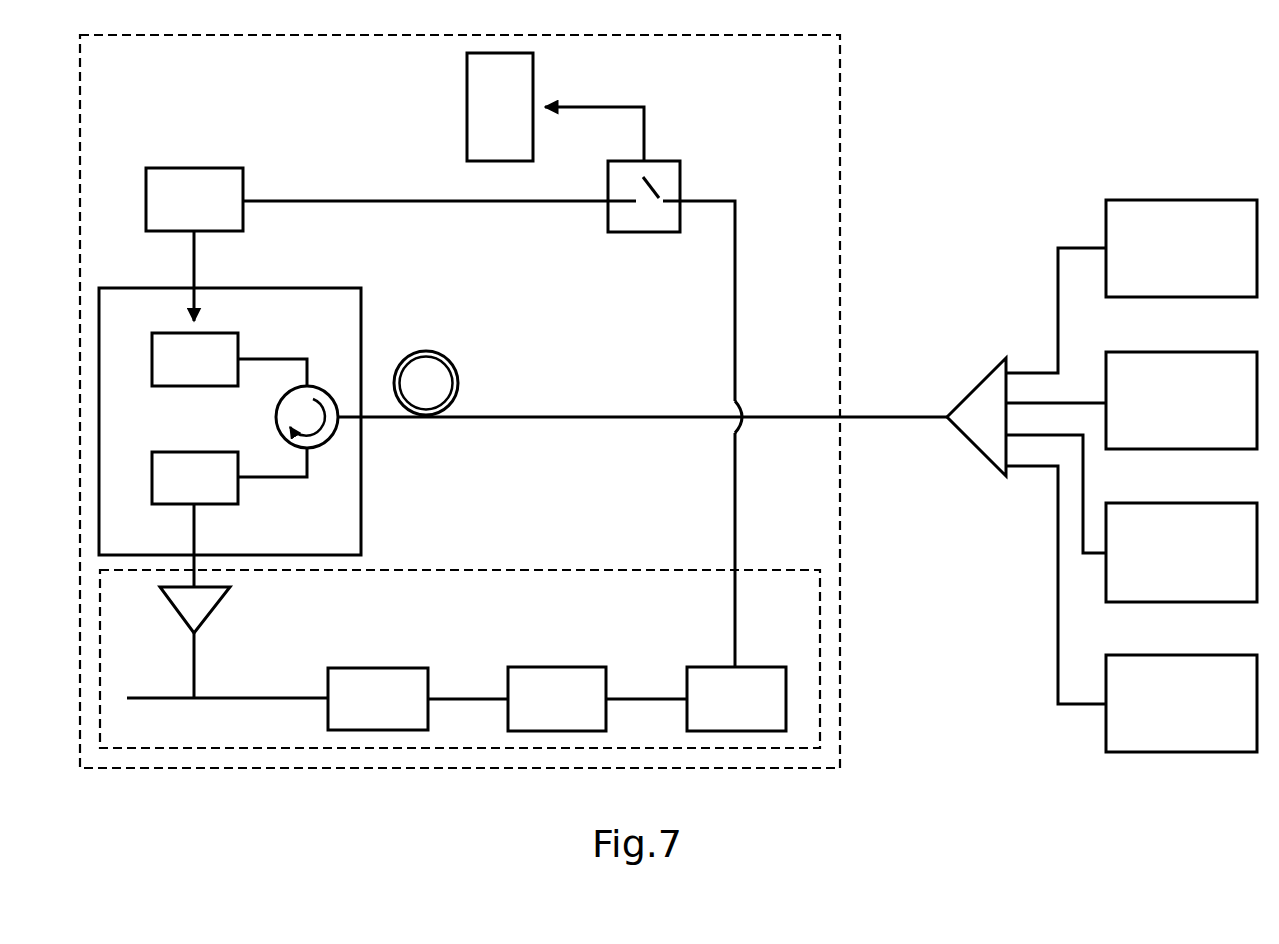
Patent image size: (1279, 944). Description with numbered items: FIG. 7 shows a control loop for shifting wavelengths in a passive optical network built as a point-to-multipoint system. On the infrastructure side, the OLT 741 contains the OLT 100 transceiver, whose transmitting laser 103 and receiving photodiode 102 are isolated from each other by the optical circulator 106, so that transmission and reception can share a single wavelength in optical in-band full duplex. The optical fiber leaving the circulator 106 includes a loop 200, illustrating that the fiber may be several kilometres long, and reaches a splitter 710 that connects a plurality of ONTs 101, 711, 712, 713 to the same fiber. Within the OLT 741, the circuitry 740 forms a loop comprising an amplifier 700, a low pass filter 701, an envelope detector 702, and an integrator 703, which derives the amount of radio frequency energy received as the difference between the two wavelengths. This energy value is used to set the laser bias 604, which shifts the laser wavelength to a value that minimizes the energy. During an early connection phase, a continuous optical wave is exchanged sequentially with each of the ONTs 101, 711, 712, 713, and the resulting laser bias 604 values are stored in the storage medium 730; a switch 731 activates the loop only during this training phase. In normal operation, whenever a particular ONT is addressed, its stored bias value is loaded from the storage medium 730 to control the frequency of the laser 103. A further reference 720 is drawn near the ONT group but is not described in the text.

The OLT 100 is at (110, 552).
The ONT 101 is at (1181, 248).
The diode 102 is at (229, 517).
The laser 103 is at (229, 359).
The optical circulator 106 is at (283, 432).
The loop 200 is at (425, 341).
The laser bias 604 is at (391, 244).
The amplifier 700 is at (226, 605).
The low pass filter 701 is at (418, 699).
The envelope detector 702 is at (597, 699).
The integrator 703 is at (736, 699).
The splitter 710 is at (975, 448).
The ONT 711 is at (1181, 400).
The ONT 712 is at (1181, 552).
The ONT 713 is at (1181, 703).
The monitoring device 720 is at (1165, 110).
The storage medium 730 is at (555, 107).
The switch 731 is at (630, 234).
The circuitry 740 is at (637, 572).
The OLT 741 is at (827, 37).